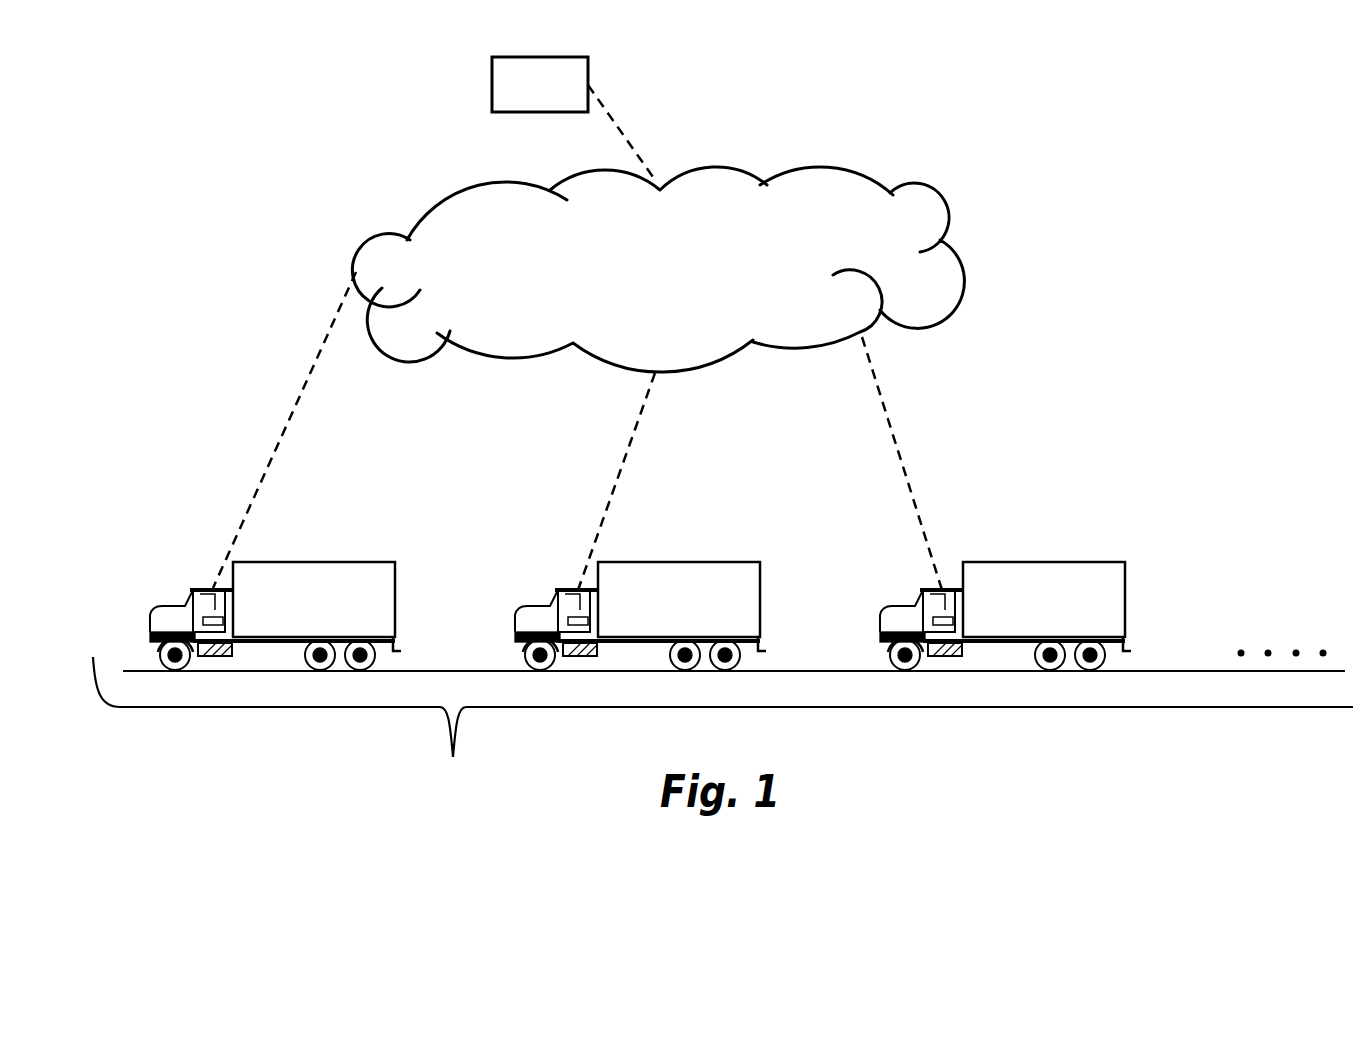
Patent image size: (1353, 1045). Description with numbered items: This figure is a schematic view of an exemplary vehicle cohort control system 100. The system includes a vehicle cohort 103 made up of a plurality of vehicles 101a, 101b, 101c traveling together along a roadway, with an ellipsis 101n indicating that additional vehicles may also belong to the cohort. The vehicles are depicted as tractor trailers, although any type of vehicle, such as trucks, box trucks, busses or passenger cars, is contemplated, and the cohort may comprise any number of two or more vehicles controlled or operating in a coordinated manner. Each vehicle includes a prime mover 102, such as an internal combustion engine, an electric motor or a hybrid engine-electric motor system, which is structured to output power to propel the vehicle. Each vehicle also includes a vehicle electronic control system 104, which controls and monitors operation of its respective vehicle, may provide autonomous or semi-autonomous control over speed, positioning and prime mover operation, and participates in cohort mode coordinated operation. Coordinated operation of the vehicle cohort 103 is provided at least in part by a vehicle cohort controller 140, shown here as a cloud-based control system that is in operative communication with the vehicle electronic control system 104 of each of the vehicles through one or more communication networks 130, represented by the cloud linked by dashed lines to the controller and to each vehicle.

The vehicle cohort control system 100 is at (1172, 102).
The vehicle 101a is at (377, 544).
The vehicle 101b is at (744, 541).
The vehicle 101c is at (1107, 544).
The ellipsis 101n is at (1268, 648).
The prime mover 102 is at (192, 605).
The vehicle cohort 103 is at (723, 724).
The vehicle electronic control system 104 is at (217, 657).
The communication network 130 is at (430, 200).
The vehicle cohort controller 140 is at (492, 80).